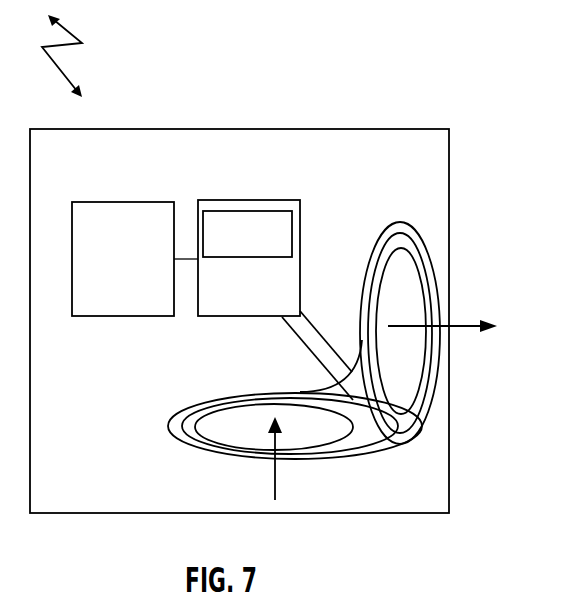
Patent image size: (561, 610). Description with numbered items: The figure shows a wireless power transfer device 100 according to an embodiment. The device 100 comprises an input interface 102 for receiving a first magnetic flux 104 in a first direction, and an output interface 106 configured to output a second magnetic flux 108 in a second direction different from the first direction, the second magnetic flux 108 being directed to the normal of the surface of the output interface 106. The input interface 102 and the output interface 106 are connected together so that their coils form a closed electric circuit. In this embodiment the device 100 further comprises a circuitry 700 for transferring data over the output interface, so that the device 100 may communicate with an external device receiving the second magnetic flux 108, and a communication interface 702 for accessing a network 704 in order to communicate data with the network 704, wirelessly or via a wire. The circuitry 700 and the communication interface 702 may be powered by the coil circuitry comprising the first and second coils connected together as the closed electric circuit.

The network 704 is at (82, 17).
The wireless power transfer device 100 is at (440, 128).
The communication interface 702 is at (112, 200).
The circuitry 700 is at (220, 200).
The output interface 106 is at (396, 219).
The input interface 102 is at (188, 400).
The second magnetic flux 108 is at (460, 325).
The first magnetic flux 104 is at (268, 478).